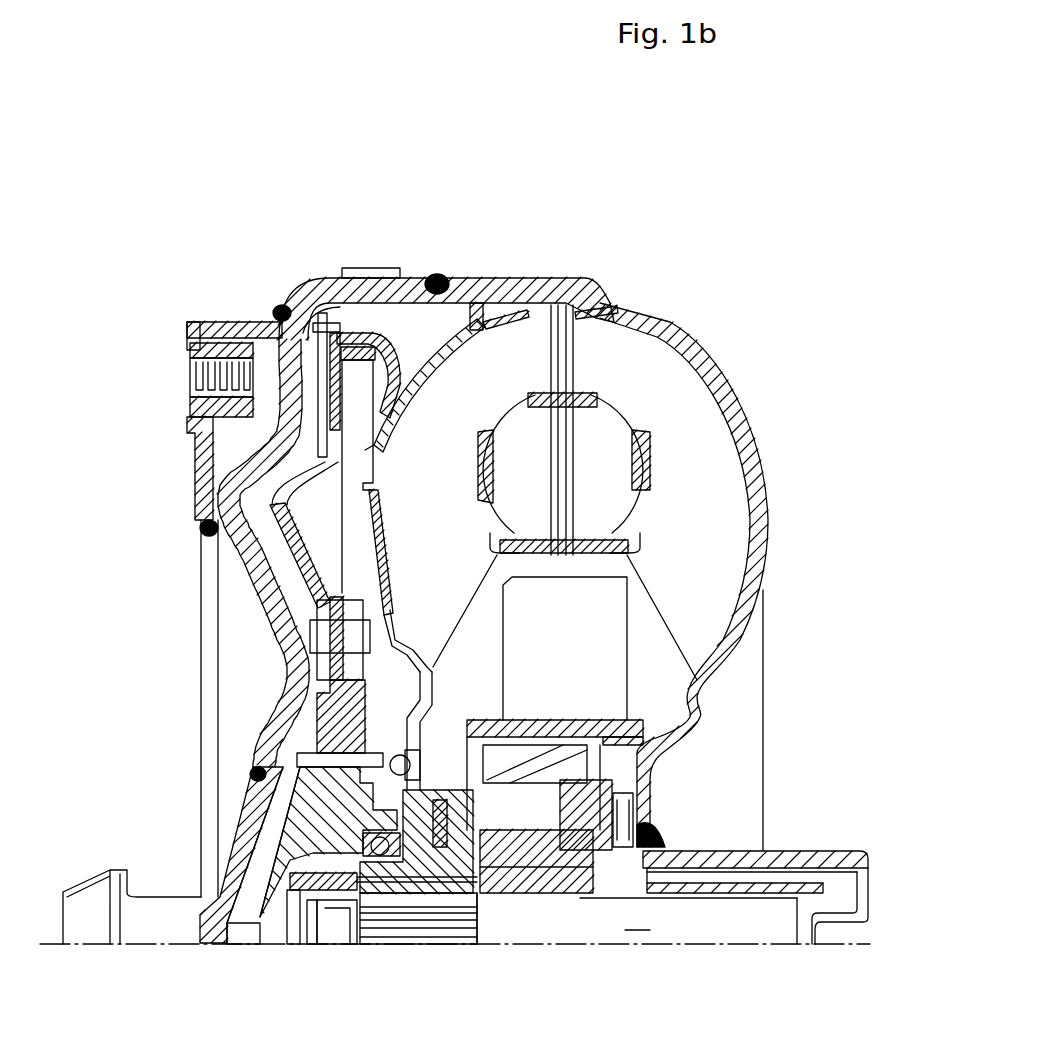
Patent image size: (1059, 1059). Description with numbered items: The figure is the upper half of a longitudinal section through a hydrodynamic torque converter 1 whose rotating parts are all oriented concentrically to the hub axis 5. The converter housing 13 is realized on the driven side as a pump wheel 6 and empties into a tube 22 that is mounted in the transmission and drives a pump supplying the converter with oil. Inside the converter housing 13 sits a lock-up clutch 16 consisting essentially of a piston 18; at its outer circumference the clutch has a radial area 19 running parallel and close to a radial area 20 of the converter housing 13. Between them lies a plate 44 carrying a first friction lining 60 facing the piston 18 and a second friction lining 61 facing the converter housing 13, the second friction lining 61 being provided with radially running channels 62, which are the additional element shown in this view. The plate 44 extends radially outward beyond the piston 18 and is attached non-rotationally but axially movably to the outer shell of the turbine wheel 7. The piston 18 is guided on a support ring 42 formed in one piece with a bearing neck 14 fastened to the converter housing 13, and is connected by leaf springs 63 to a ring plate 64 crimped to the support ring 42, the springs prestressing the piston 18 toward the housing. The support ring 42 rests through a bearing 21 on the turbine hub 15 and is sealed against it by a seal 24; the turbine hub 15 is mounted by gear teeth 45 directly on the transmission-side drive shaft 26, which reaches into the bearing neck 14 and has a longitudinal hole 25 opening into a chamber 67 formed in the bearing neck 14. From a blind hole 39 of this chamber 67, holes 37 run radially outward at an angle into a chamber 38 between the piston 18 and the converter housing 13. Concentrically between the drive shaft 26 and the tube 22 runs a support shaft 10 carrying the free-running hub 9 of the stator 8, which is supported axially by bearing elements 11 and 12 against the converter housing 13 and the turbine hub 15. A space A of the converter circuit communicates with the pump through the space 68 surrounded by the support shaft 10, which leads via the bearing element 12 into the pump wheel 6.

The hydrodynamic torque converter 1 is at (756, 346).
The hub axis 5 is at (43, 944).
The pump wheel 6 is at (755, 458).
The turbine wheel 7 is at (453, 418).
The stator 8 is at (555, 672).
The free-running hub 9 is at (590, 776).
The support shaft 10 is at (797, 890).
The bearing element 11 is at (628, 816).
The bearing element 12 is at (440, 800).
The converter housing 13 is at (650, 330).
The bearing neck 14 is at (150, 915).
The turbine hub 15 is at (430, 885).
The lock-up clutch 16 is at (292, 512).
The piston 18 is at (290, 563).
The radial area 19 is at (365, 357).
The radial area 20 is at (285, 425).
The bearing 21 is at (398, 880).
The tube 22 is at (745, 851).
The seal 24 is at (337, 912).
The longitudinal hole 25 is at (720, 935).
The drive shaft 26 is at (637, 918).
The holes 37 is at (285, 843).
The chamber 38 is at (285, 600).
The blind hole 39 is at (242, 925).
The support ring 42 is at (312, 803).
The plate 44 is at (330, 300).
The gear teeth 45 is at (447, 905).
The first friction lining 60 is at (338, 330).
The second friction lining 61 is at (263, 330).
The channels 62 is at (300, 387).
The leaf springs 63 is at (350, 598).
The ring plate 64 is at (350, 690).
The chamber 67 is at (296, 905).
The space 68 is at (800, 900).
The space A is at (392, 402).